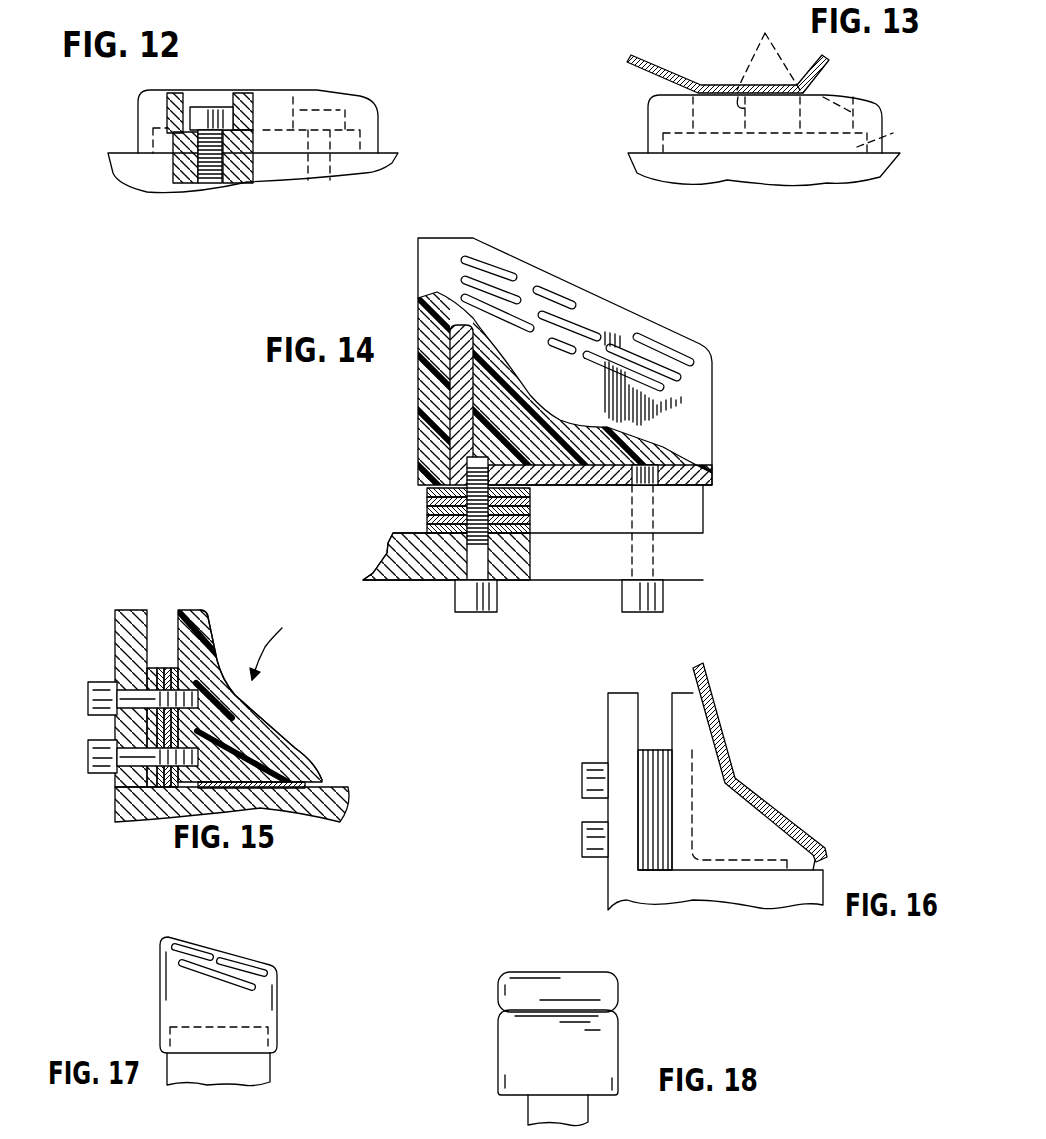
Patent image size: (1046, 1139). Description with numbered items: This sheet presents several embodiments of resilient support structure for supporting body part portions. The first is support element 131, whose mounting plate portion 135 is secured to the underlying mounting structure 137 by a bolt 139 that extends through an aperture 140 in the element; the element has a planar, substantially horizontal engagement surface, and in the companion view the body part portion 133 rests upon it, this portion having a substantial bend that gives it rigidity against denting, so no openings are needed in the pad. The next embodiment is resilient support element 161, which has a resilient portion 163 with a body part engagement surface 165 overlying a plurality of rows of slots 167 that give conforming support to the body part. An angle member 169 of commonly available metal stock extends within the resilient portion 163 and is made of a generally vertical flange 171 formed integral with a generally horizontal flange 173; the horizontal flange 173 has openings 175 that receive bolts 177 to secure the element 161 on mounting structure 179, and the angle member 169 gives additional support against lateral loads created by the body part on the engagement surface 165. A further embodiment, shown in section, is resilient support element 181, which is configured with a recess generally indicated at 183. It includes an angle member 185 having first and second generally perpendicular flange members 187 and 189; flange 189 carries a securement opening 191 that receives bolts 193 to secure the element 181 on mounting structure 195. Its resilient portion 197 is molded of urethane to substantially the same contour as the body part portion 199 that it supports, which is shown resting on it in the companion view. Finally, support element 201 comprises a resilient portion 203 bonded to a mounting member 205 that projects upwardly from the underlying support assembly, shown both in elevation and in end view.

In FIG. 12, the support element 131 is at (160, 105).
In FIG. 13, the support element 131 is at (670, 110).
In FIG. 13, the body part portion 133 is at (675, 60).
In FIG. 12, the mounting plate portion 135 is at (243, 140).
In FIG. 13, the mounting plate portion 135 is at (890, 127).
In FIG. 12, the mounting structure 137 is at (143, 167).
In FIG. 13, the mounting structure 137 is at (663, 167).
In FIG. 12, the bolt 139 is at (207, 117).
In FIG. 12, the aperture 140 is at (320, 97).
In FIG. 13, the aperture 140 is at (778, 78).
In FIG. 14, the resilient support element 161 is at (700, 425).
In FIG. 14, the resilient portion 163 is at (703, 375).
In FIG. 14, the body part engagement surface 165 is at (620, 285).
In FIG. 14, the slots 167 is at (670, 348).
In FIG. 14, the angle member 169 is at (470, 432).
In FIG. 14, the vertical flange 171 is at (465, 350).
In FIG. 14, the horizontal flange 173 is at (703, 477).
In FIG. 14, the openings 175 is at (637, 487).
In FIG. 14, the bolts 177 is at (630, 600).
In FIG. 14, the mounting structure 179 is at (388, 555).
In FIG. 15, the resilient support element 181 is at (197, 617).
In FIG. 15, the recess 183 is at (238, 693).
In FIG. 15, the angle member 185 is at (188, 780).
In FIG. 15, the flange member 187 is at (285, 782).
In FIG. 15, the flange member 189 is at (185, 723).
In FIG. 15, the securement opening 191 is at (281, 643).
In FIG. 15, the bolts 193 is at (107, 703).
In FIG. 15, the mounting structure 195 is at (337, 803).
In FIG. 15, the resilient portion 197 is at (212, 640).
In FIG. 16, the body part portion 199 is at (760, 806).
In FIG. 17, the support element 201 is at (172, 987).
In FIG. 17, the resilient portion 203 is at (265, 1003).
In FIG. 17, the mounting member 205 is at (263, 1068).